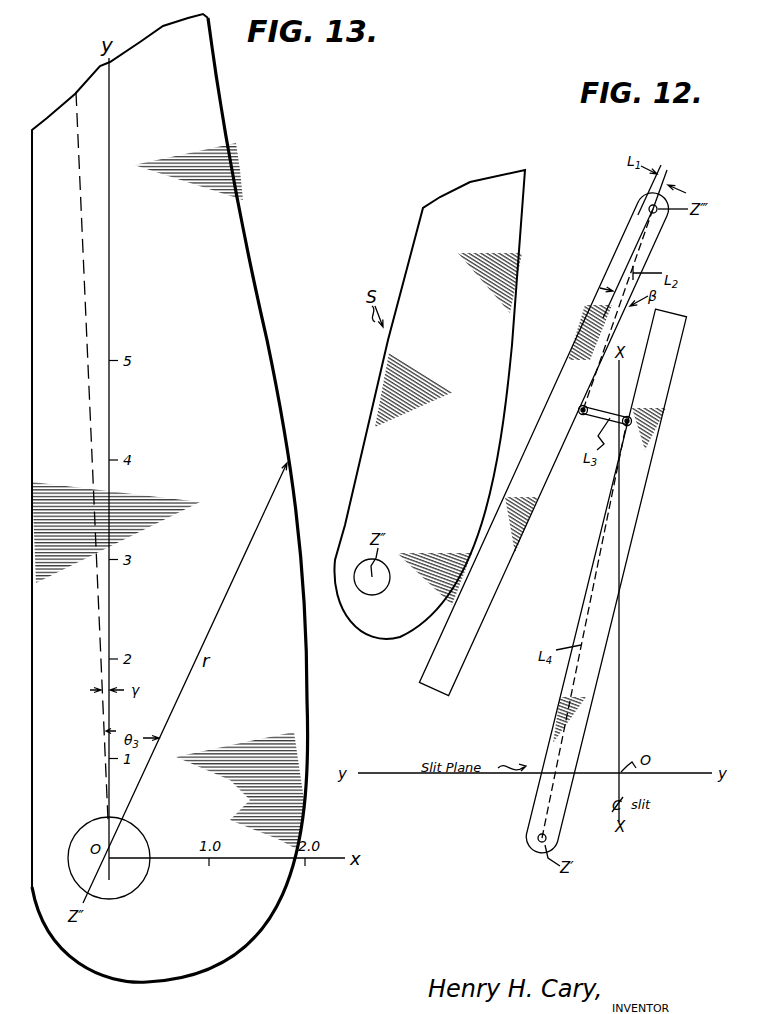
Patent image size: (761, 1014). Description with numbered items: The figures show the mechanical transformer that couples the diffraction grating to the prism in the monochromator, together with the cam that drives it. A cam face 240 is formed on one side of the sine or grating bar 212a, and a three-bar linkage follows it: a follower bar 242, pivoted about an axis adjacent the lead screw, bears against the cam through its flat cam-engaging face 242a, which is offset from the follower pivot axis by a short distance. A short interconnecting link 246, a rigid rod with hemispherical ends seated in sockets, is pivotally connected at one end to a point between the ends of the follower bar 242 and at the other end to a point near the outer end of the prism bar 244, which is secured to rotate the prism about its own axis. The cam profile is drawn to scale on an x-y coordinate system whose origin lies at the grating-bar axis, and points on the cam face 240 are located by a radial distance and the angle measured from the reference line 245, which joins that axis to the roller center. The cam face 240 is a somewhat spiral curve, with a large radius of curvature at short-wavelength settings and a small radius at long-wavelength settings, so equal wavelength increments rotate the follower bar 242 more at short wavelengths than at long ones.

In FIG. 13, the cam face 240 is at (263, 297).
In FIG. 12, the cam face 240 is at (519, 262).
In FIG. 13, the sine or grating bar 212a is at (233, 421).
In FIG. 12, the sine or grating bar 212a is at (373, 438).
In FIG. 13, the reference line 245 is at (82, 229).
In FIG. 12, the follower bar 242 is at (504, 566).
In FIG. 12, the cam-engaging face 242a is at (539, 412).
In FIG. 12, the prism bar 244 is at (605, 597).
In FIG. 12, the interconnecting link 246 is at (604, 411).